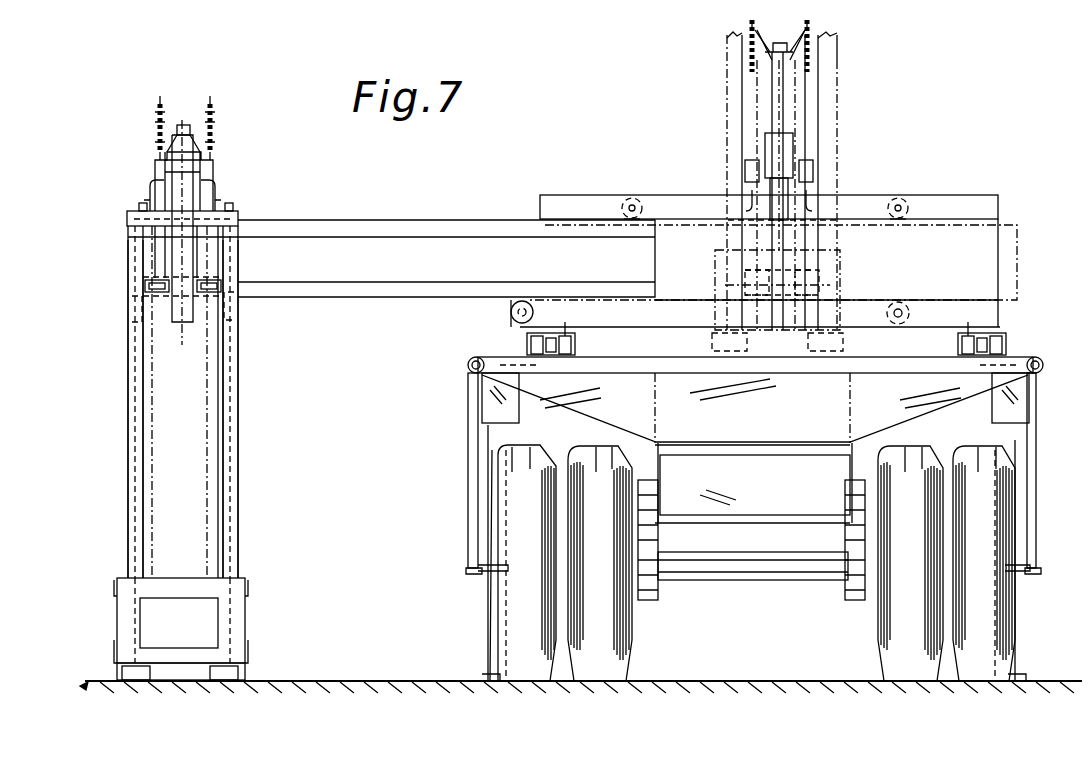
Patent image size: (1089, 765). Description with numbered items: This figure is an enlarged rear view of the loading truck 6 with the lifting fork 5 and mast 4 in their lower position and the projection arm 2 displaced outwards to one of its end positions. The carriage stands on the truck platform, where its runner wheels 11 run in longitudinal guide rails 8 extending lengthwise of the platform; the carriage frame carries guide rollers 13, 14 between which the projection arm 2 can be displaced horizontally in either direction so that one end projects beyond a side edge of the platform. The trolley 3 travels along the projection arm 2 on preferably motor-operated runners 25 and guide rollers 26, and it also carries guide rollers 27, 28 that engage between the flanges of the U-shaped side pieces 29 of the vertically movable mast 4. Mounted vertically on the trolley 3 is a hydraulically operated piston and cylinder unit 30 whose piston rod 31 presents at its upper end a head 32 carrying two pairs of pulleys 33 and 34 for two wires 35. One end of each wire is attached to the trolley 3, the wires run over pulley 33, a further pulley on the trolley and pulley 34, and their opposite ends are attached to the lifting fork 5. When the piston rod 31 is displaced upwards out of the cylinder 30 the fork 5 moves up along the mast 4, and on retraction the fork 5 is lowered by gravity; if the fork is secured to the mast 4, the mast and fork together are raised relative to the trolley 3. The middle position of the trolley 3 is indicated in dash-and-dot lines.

The projection arm 2 is at (392, 212).
The trolley 3 is at (150, 178).
The mast 4 is at (240, 460).
The lifting fork 5 is at (246, 602).
The loading truck 6 is at (484, 597).
The guide rails 8 is at (500, 338).
The runner wheels 11 is at (576, 348).
The guide rollers 13 is at (632, 204).
The guide rollers 14 is at (510, 316).
The runners 25 is at (146, 186).
The guide rollers 26 is at (216, 284).
The guide rollers 27 is at (139, 206).
The guide rollers 28 is at (134, 306).
The U-shaped side pieces 29 is at (128, 452).
The piston and cylinder unit 30 is at (184, 322).
The piston rod 31 is at (182, 125).
The head 32 is at (194, 128).
The pulleys 33 is at (158, 110).
The pulleys 34 is at (156, 135).
The wires 35 is at (150, 428).